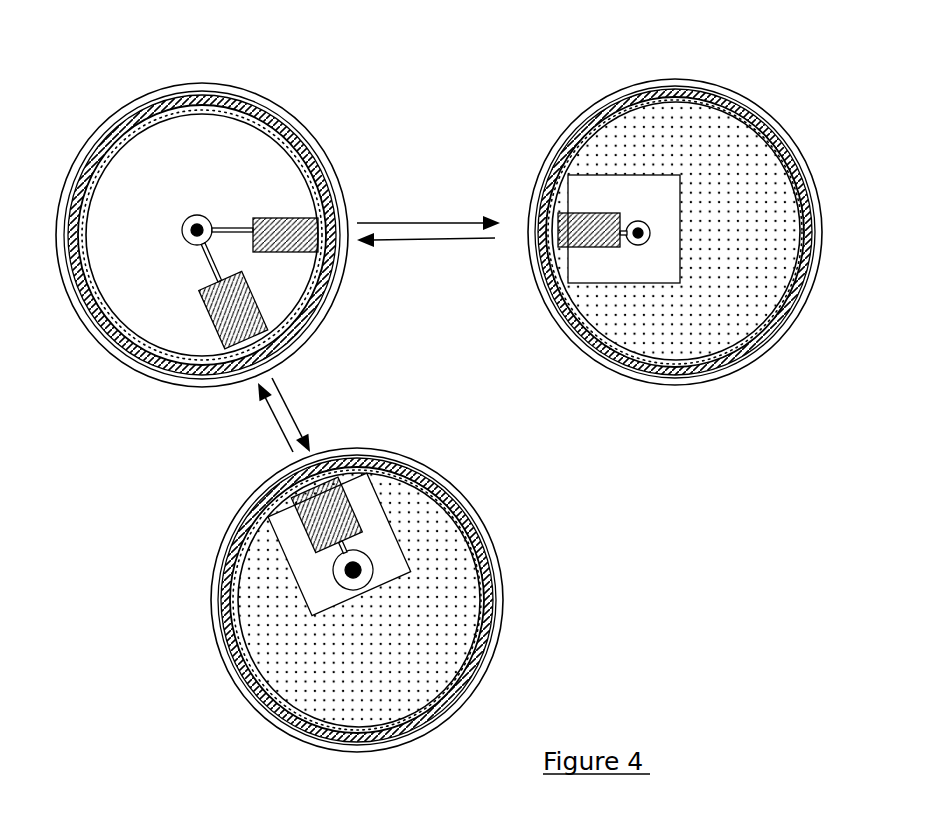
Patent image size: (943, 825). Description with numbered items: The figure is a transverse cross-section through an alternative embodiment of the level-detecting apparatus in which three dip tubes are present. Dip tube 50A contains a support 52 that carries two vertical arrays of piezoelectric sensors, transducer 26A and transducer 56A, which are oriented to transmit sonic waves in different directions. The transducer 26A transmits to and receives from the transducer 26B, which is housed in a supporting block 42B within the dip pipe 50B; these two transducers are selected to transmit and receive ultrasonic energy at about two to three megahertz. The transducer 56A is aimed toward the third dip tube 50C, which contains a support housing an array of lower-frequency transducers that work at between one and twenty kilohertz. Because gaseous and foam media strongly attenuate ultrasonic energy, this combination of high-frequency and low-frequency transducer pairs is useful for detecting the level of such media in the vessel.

The dip tube 50A is at (66, 137).
The support 52 is at (202, 167).
The transducer 26A is at (305, 218).
The transducer 56A is at (227, 327).
The dip pipe 50B is at (810, 130).
The supporting block 42B is at (593, 197).
The transducer 26B is at (555, 213).
The dip tube 50C is at (180, 664).